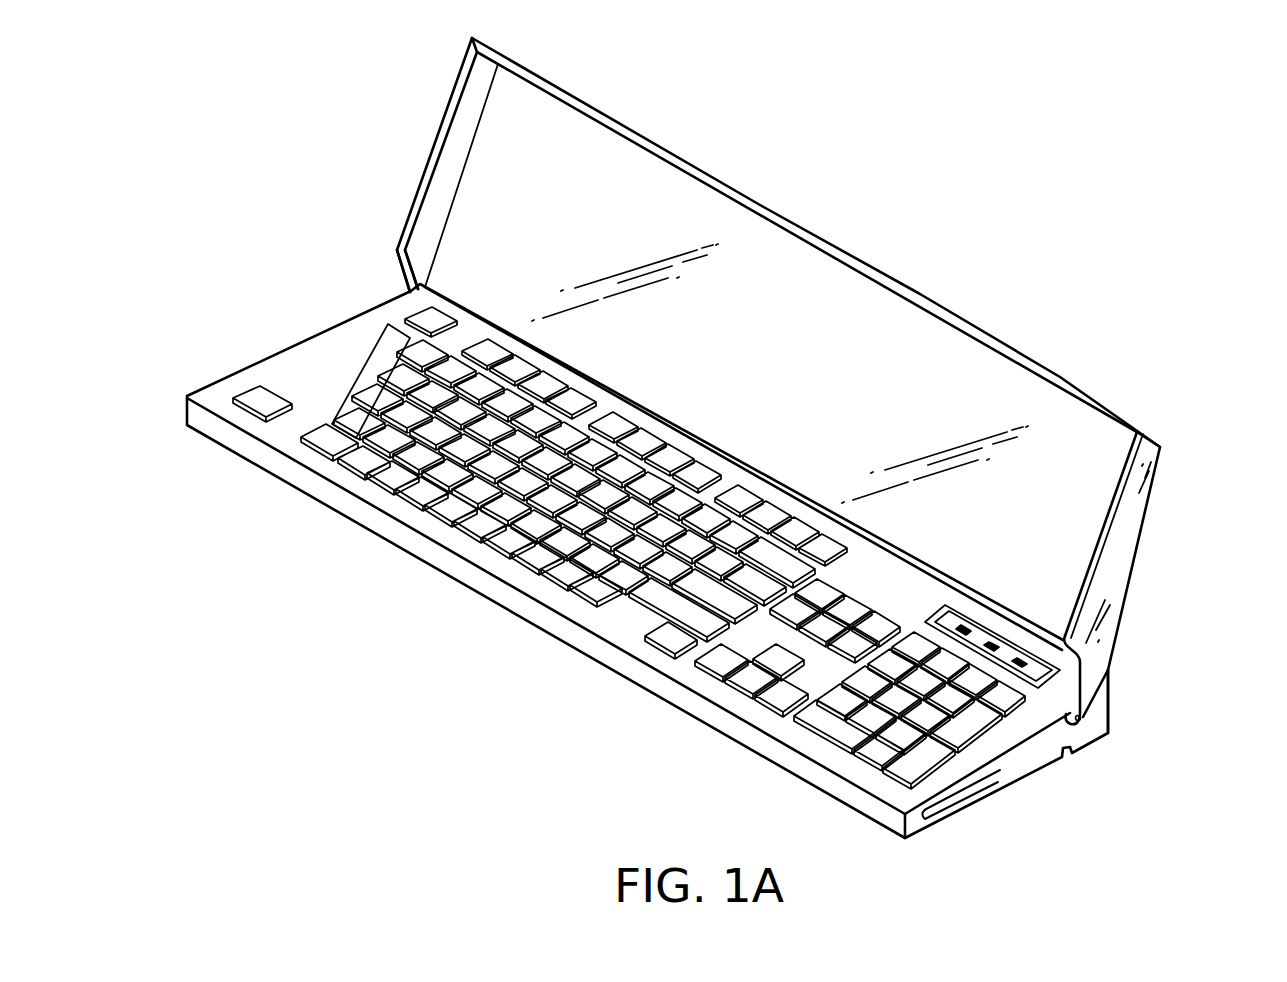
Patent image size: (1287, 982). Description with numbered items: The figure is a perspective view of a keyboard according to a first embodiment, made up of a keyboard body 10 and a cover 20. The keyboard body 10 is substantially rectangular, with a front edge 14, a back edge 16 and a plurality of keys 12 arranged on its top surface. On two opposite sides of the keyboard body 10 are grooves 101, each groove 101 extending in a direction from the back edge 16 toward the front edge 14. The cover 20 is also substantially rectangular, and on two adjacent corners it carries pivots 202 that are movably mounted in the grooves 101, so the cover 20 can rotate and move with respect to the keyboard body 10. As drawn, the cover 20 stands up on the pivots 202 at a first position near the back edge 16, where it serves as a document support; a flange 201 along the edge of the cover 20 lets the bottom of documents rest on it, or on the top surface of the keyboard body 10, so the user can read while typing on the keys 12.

The keyboard body 10 is at (382, 535).
The keys 12 is at (683, 637).
The front edge 14 is at (646, 548).
The back edge 16 is at (1108, 667).
The cover 20 is at (1136, 561).
The groove 101 is at (960, 788).
The flange 201 is at (455, 297).
The pivots 202 is at (1082, 723).